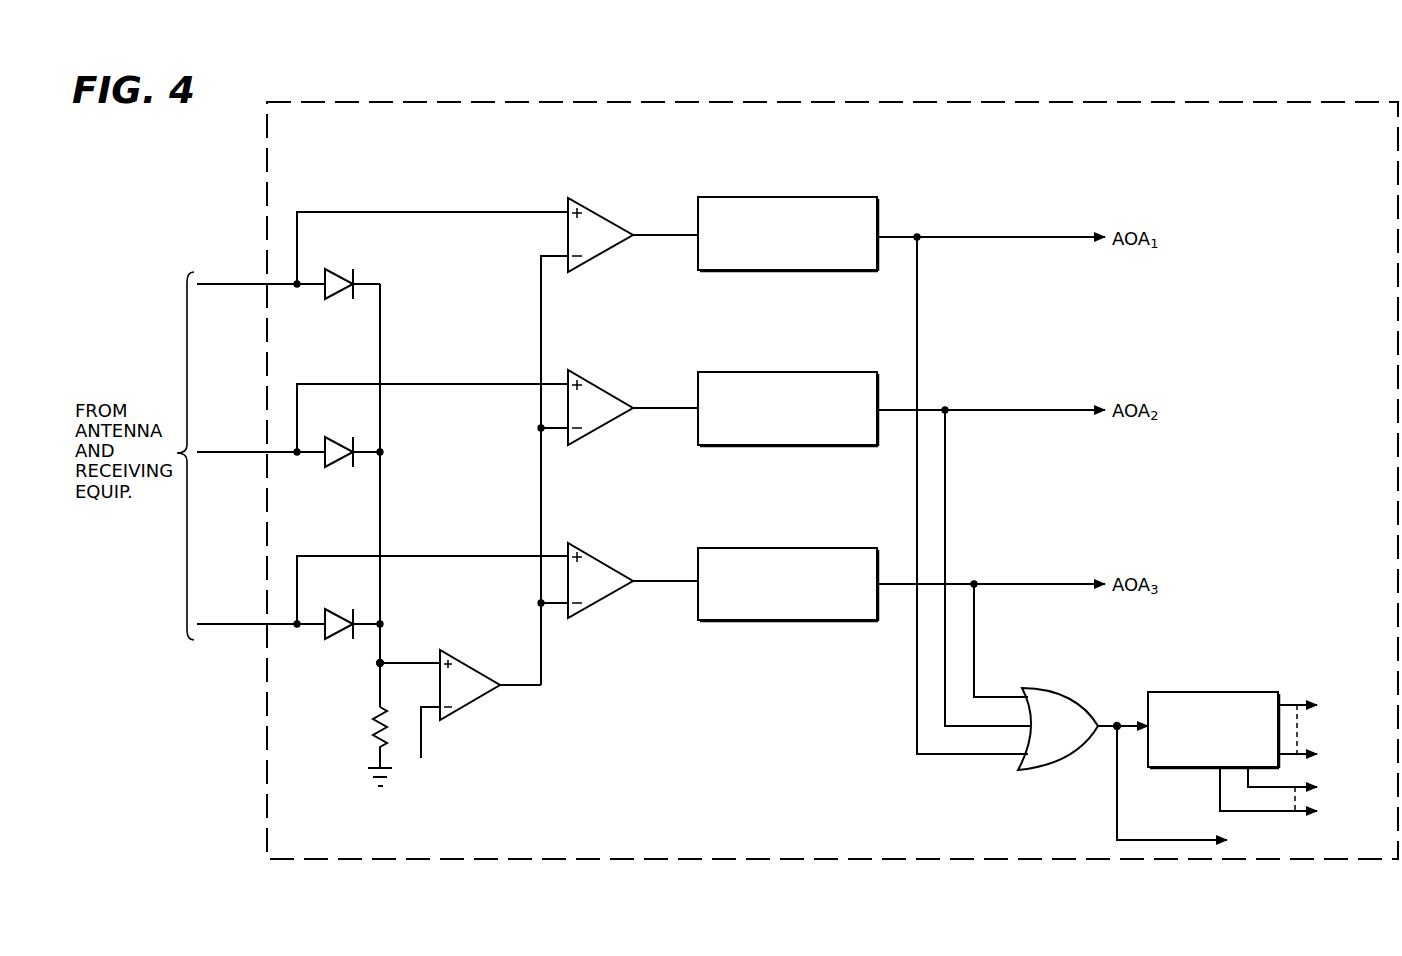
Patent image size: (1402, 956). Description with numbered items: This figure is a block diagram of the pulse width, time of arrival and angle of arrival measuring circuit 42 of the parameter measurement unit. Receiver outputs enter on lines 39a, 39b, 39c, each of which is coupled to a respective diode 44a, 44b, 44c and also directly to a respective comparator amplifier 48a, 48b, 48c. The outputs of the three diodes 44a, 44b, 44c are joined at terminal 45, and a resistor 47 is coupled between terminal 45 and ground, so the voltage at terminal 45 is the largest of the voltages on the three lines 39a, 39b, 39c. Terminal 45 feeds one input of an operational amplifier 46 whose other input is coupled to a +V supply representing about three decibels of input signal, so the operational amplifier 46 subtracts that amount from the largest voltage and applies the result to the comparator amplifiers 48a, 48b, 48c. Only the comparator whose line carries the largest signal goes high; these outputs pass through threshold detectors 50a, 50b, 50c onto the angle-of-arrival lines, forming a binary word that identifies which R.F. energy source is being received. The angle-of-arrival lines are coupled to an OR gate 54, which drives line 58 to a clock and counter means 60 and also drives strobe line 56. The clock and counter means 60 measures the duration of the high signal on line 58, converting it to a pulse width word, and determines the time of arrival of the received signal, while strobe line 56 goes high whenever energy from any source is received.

The pulse width, time of arrival and angle of arrival measuring circuit 42 is at (897, 862).
The line 39a is at (244, 284).
The line 39b is at (238, 452).
The line 39c is at (231, 624).
The diode 44a is at (338, 273).
The diode 44b is at (338, 440).
The diode 44c is at (338, 612).
The terminal 45 is at (385, 657).
The operational amplifier 46 is at (470, 667).
The resistor 47 is at (374, 730).
The comparator amplifier 48a is at (606, 217).
The comparator amplifier 48b is at (603, 390).
The comparator amplifier 48c is at (606, 560).
The threshold detector 50a is at (798, 196).
The threshold detector 50b is at (775, 371).
The threshold detector 50c is at (764, 548).
The OR gate 54 is at (1073, 700).
The strobe line 56 is at (1170, 838).
The line 58 is at (1103, 721).
The clock and counter means 60 is at (1205, 690).